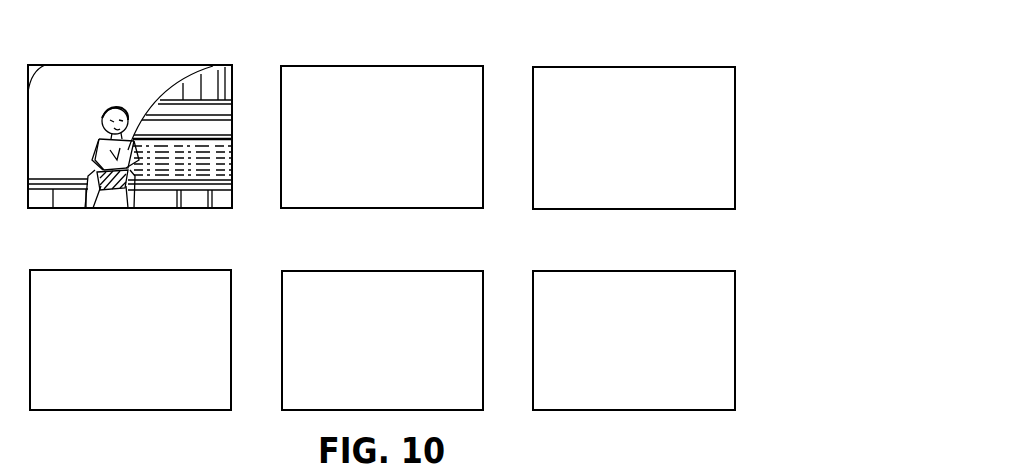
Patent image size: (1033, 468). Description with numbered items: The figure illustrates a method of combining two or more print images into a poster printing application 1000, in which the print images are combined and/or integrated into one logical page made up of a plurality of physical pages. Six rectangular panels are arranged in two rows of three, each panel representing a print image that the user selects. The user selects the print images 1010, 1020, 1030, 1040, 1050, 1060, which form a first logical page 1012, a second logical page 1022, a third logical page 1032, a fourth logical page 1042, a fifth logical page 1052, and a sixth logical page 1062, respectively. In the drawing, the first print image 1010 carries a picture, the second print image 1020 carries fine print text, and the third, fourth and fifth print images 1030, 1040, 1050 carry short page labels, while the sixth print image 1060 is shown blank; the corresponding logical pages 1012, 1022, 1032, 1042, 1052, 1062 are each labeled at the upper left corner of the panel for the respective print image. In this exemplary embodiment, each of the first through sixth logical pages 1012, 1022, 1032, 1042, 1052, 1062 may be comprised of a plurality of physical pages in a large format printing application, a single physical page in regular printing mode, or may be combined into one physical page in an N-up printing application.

The poster printing application 1000 is at (716, 29).
The print image 1010 is at (183, 65).
The first logical page 1012 is at (70, 65).
The print image 1020 is at (443, 65).
The second logical page 1022 is at (328, 65).
The print image 1030 is at (688, 65).
The third logical page 1032 is at (575, 65).
The print image 1040 is at (183, 268).
The fourth logical page 1042 is at (70, 268).
The print image 1050 is at (443, 269).
The fifth logical page 1052 is at (328, 269).
The print image 1060 is at (688, 269).
The sixth logical page 1062 is at (575, 269).